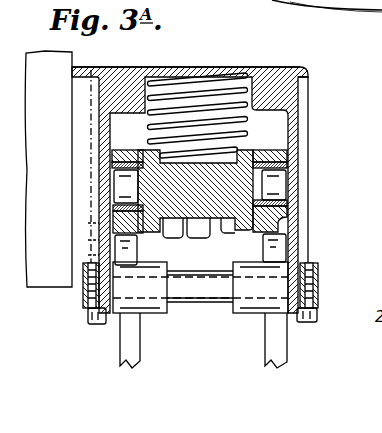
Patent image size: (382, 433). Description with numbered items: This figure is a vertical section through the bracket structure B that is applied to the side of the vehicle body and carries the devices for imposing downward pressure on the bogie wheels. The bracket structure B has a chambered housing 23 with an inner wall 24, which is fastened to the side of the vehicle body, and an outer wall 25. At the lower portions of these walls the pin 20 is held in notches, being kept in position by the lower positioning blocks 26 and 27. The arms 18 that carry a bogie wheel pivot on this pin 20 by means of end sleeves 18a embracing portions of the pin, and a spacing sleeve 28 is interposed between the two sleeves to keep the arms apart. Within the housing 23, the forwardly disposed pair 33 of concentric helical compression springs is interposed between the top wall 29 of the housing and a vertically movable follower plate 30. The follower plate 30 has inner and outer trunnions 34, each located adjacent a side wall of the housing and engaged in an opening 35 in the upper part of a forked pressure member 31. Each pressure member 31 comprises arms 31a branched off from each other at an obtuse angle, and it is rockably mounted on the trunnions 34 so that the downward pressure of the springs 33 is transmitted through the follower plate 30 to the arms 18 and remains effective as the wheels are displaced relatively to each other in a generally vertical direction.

The bracket structure B is at (322, 80).
The arms 18 is at (128, 364).
The end sleeves 18a is at (248, 312).
The pin 20 is at (190, 286).
The housing 23 is at (300, 133).
The inner wall 24 is at (100, 133).
The outer wall 25 is at (290, 164).
The lower positioning block 26 is at (318, 305).
The lower positioning block 27 is at (87, 306).
The spacing sleeve 28 is at (212, 299).
The top wall 29 is at (146, 67).
The follower plate 30 is at (205, 218).
The pressure members 31 is at (273, 227).
The arms of pressure member 31a is at (277, 253).
The forwardly disposed pair of concentric helical springs 33 is at (217, 97).
The trunnions 34 is at (118, 181).
The opening 35 is at (110, 155).